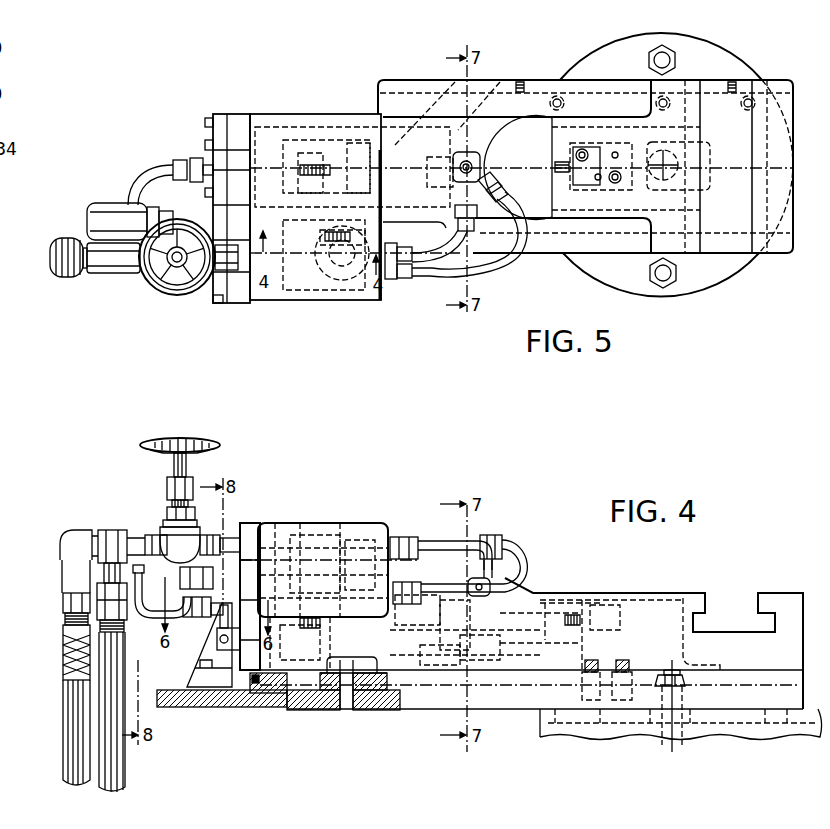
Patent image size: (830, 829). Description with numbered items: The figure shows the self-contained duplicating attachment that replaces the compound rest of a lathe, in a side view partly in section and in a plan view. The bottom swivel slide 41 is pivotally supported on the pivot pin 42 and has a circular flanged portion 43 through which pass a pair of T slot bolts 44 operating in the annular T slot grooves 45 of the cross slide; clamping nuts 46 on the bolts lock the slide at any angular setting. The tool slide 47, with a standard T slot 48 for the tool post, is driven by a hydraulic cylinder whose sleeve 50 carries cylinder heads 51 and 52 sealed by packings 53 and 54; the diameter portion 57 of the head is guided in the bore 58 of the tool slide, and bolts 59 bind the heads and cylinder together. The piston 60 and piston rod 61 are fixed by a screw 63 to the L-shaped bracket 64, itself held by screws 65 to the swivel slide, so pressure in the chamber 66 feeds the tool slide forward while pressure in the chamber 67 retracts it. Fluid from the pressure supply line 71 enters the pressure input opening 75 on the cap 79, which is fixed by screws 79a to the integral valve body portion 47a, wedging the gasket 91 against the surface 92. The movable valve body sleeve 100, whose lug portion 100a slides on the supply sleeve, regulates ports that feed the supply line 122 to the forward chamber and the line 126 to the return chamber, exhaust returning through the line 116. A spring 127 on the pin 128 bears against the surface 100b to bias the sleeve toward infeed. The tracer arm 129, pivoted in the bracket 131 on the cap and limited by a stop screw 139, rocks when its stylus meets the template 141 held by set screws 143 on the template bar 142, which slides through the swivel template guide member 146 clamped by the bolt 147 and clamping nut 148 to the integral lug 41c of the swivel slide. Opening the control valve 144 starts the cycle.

In FIG. 5, the bottom swivel slide 41 is at (641, 290).
In FIG. 4, the bottom swivel slide 41 is at (560, 708).
In FIG. 5, the integral lug 41c is at (325, 253).
In FIG. 4, the integral lug 41c is at (368, 700).
In FIG. 5, the pivot pin 42 is at (680, 162).
In FIG. 4, the pivot pin 42 is at (700, 704).
In FIG. 5, the circular flanged portion 43 is at (597, 58).
In FIG. 4, the circular flanged portion 43 is at (728, 695).
In FIG. 5, the T slot bolts 44 is at (664, 52).
In FIG. 4, the T slot bolts 44 is at (669, 670).
In FIG. 4, the annular T slot grooves 45 is at (636, 738).
In FIG. 5, the clamping nuts 46 is at (677, 62).
In FIG. 4, the clamping nuts 46 is at (685, 680).
In FIG. 5, the tool slide 47 is at (600, 243).
In FIG. 4, the tool slide 47 is at (640, 596).
In FIG. 5, the valve body portion 47a is at (349, 298).
In FIG. 4, the valve body portion 47a is at (360, 526).
In FIG. 5, the T slot 48 is at (738, 256).
In FIG. 4, the T slot 48 is at (705, 620).
In FIG. 5, the sleeve 50 is at (278, 128).
In FIG. 4, the sleeve 50 is at (318, 705).
In FIG. 5, the cylinder head 51 is at (226, 113).
In FIG. 5, the cylinder head 52 is at (497, 96).
In FIG. 4, the cylinder head 52 is at (495, 688).
In FIG. 5, the packing 53 is at (205, 133).
In FIG. 4, the packing 53 is at (215, 700).
In FIG. 5, the packing 54 is at (449, 142).
In FIG. 4, the packing 54 is at (448, 598).
In FIG. 4, the diameter portion 57 is at (512, 650).
In FIG. 5, the bore 58 is at (513, 152).
In FIG. 4, the bore 58 is at (538, 593).
In FIG. 5, the bolts 59 is at (205, 120).
In FIG. 5, the piston 60 is at (340, 128).
In FIG. 4, the piston 60 is at (306, 660).
In FIG. 5, the piston rod 61 is at (392, 178).
In FIG. 4, the piston rod 61 is at (548, 635).
In FIG. 5, the screw 63 is at (598, 150).
In FIG. 4, the screw 63 is at (603, 618).
In FIG. 5, the L-shaped bracket 64 is at (583, 215).
In FIG. 4, the L-shaped bracket 64 is at (595, 603).
In FIG. 5, the screws 65 is at (584, 150).
In FIG. 4, the screws 65 is at (600, 706).
In FIG. 5, the chamber 66 is at (396, 132).
In FIG. 4, the chamber 66 is at (422, 680).
In FIG. 5, the chamber 67 is at (262, 130).
In FIG. 4, the chamber 67 is at (300, 705).
In FIG. 5, the pressure supply line 71 is at (120, 263).
In FIG. 4, the pressure supply line 71 is at (62, 731).
In FIG. 5, the pressure input opening 75 is at (224, 272).
In FIG. 4, the pressure input opening 75 is at (240, 535).
In FIG. 5, the cap 79 is at (249, 305).
In FIG. 4, the cap 79 is at (251, 530).
In FIG. 5, the screws 79a is at (232, 306).
In FIG. 5, the gasket 91 is at (372, 172).
In FIG. 4, the gasket 91 is at (393, 540).
In FIG. 5, the surface 92 is at (378, 288).
In FIG. 4, the surface 92 is at (372, 563).
In FIG. 5, the movable valve body sleeve 100 is at (287, 305).
In FIG. 4, the movable valve body sleeve 100 is at (289, 530).
In FIG. 4, the lug portion 100a is at (325, 535).
In FIG. 5, the surface 100b is at (342, 305).
In FIG. 4, the surface 100b is at (357, 535).
In FIG. 5, the line 116 is at (110, 208).
In FIG. 4, the line 116 is at (127, 762).
In FIG. 5, the supply line 122 is at (502, 265).
In FIG. 4, the supply line 122 is at (530, 556).
In FIG. 5, the line 126 is at (142, 178).
In FIG. 4, the line 126 is at (148, 620).
In FIG. 5, the spring 127 is at (324, 229).
In FIG. 5, the pin 128 is at (383, 236).
In FIG. 4, the tracer arm 129 is at (196, 655).
In FIG. 4, the bracket 131 is at (217, 640).
In FIG. 4, the stop screw 139 is at (195, 708).
In FIG. 4, the template 141 is at (258, 697).
In FIG. 4, the template bar 142 is at (272, 700).
In FIG. 4, the set screws 143 is at (268, 700).
In FIG. 5, the control valve 144 is at (158, 290).
In FIG. 4, the control valve 144 is at (165, 512).
In FIG. 4, the swivel template guide member 146 is at (205, 708).
In FIG. 5, the bolt 147 is at (328, 282).
In FIG. 4, the bolt 147 is at (342, 690).
In FIG. 5, the clamping nut 148 is at (380, 305).
In FIG. 4, the clamping nut 148 is at (375, 660).